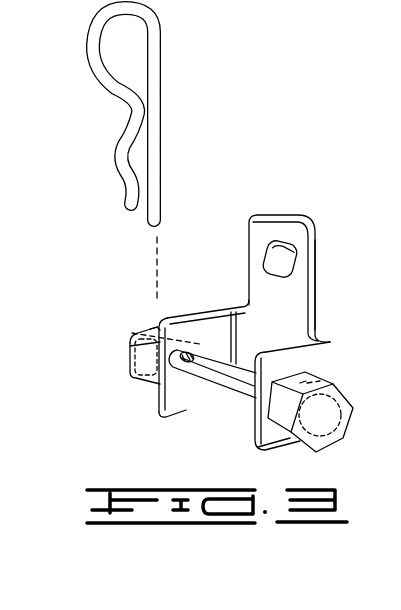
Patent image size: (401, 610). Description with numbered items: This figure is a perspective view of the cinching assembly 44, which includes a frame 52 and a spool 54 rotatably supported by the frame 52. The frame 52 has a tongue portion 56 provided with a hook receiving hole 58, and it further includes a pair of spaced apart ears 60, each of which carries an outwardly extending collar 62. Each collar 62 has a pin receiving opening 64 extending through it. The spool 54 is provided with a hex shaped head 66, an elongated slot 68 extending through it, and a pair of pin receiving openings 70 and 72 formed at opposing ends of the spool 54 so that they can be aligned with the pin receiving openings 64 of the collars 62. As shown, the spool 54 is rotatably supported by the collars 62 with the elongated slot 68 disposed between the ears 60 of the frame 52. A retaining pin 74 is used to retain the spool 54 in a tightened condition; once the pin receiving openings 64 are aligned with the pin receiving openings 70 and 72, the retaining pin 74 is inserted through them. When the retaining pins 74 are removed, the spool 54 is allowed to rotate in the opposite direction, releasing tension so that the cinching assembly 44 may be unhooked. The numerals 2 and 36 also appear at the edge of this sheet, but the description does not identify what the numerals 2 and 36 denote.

The assembly 2 is at (396, 35).
The member 36 is at (389, 60).
The cinching assembly 44 is at (300, 222).
The frame 52 is at (316, 323).
The spool 54 is at (225, 393).
The tongue portion 56 is at (313, 267).
The hook receiving hole 58 is at (262, 263).
The ears 60 is at (160, 410).
The collar 62 is at (137, 382).
The pin receiving opening 64 is at (157, 327).
The hex shaped head 66 is at (333, 428).
The elongated slot 68 is at (233, 380).
The pin receiving opening 70 is at (132, 333).
The pin receiving opening 72 is at (320, 381).
The retaining pin 74 is at (160, 80).